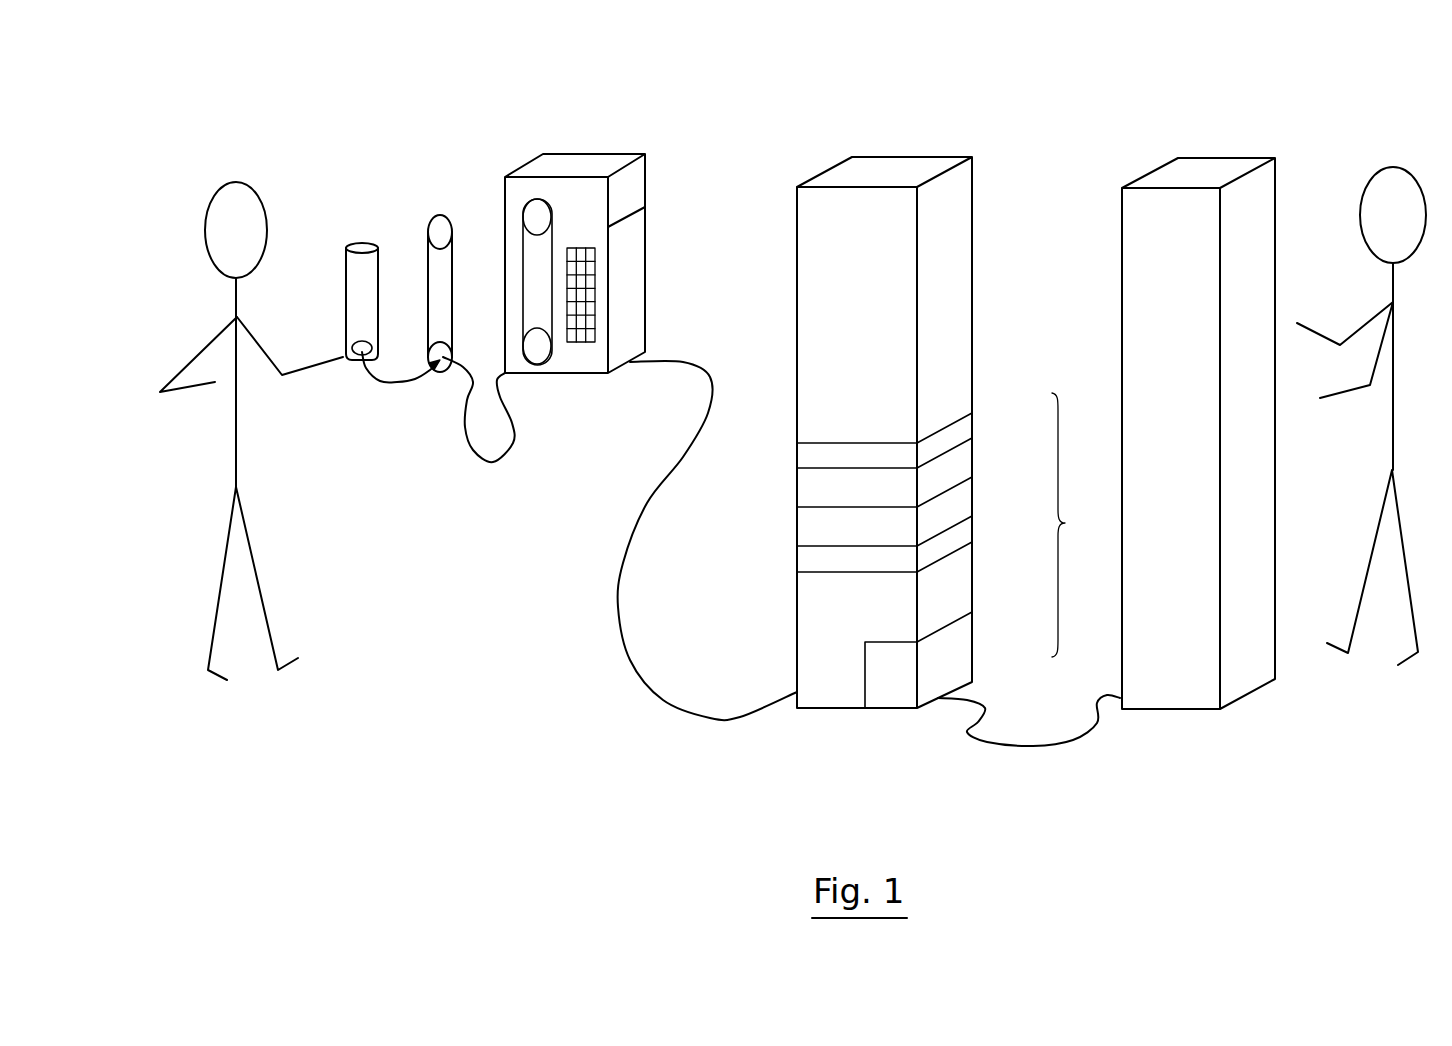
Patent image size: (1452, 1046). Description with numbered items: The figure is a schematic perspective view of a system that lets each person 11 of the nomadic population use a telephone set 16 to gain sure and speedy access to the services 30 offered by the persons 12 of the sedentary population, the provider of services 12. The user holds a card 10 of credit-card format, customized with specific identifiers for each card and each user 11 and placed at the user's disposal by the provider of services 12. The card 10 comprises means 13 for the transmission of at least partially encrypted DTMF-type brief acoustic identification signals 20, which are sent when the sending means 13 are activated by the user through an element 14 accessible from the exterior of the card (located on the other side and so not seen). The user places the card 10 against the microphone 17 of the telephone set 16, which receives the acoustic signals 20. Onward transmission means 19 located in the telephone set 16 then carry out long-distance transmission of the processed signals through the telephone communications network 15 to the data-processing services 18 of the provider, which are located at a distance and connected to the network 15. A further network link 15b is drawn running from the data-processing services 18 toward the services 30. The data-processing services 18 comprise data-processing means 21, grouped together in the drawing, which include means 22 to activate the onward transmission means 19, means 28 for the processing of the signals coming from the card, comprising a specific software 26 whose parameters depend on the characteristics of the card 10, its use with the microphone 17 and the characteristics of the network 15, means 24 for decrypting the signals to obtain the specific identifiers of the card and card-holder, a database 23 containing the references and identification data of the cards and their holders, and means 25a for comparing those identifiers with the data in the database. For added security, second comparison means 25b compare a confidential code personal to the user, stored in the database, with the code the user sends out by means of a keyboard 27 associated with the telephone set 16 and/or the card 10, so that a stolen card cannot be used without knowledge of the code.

The card 10 is at (344, 290).
The person of the nomadic population 11 is at (238, 183).
The provider of services 12 is at (1393, 177).
The transmission means 13 is at (355, 361).
The element accessible from the exterior of the card 14 is at (336, 328).
The telephone communications network 15 is at (627, 542).
The cable connecting computer to second computer 15b is at (1033, 747).
The telephone set 16 is at (603, 231).
The microphone 17 is at (443, 380).
The data-processing services 18 is at (902, 398).
The onward transmission means 19 is at (638, 188).
The acoustic identification signals 20 is at (397, 382).
The data-processing means 21 is at (1076, 525).
The activation means 22 is at (963, 527).
The database 23 is at (963, 503).
The decryption means 24 is at (962, 462).
The comparison means 25a is at (967, 427).
The second comparison means 25b is at (795, 455).
The specific software 26 is at (962, 652).
The keyboard 27 is at (592, 297).
The signal processing means 28 is at (810, 670).
The services 30 is at (1203, 168).